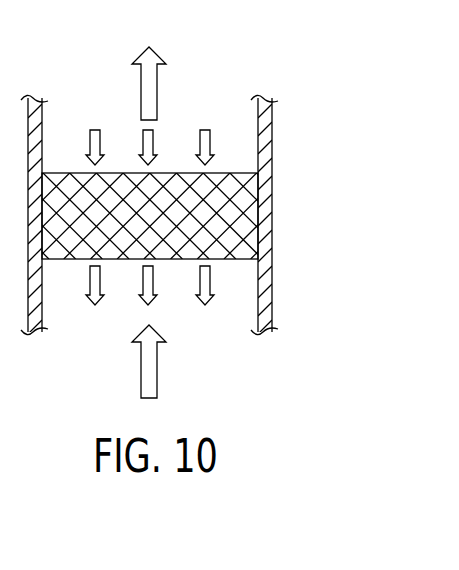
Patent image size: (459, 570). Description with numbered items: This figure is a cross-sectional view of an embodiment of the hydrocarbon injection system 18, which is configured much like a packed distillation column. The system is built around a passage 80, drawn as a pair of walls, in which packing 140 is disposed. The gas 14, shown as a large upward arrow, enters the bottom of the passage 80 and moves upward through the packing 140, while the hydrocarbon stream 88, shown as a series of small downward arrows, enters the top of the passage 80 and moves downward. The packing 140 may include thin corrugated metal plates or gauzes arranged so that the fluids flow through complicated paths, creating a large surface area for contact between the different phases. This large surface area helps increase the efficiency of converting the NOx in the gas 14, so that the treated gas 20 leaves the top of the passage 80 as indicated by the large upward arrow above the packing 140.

The hydrocarbon injection system 18 is at (243, 34).
The treated gas 20 is at (160, 53).
The gas 14 is at (140, 371).
The passage 80 is at (272, 220).
The hydrocarbon stream 88 is at (88, 148).
The packing 140 is at (167, 231).